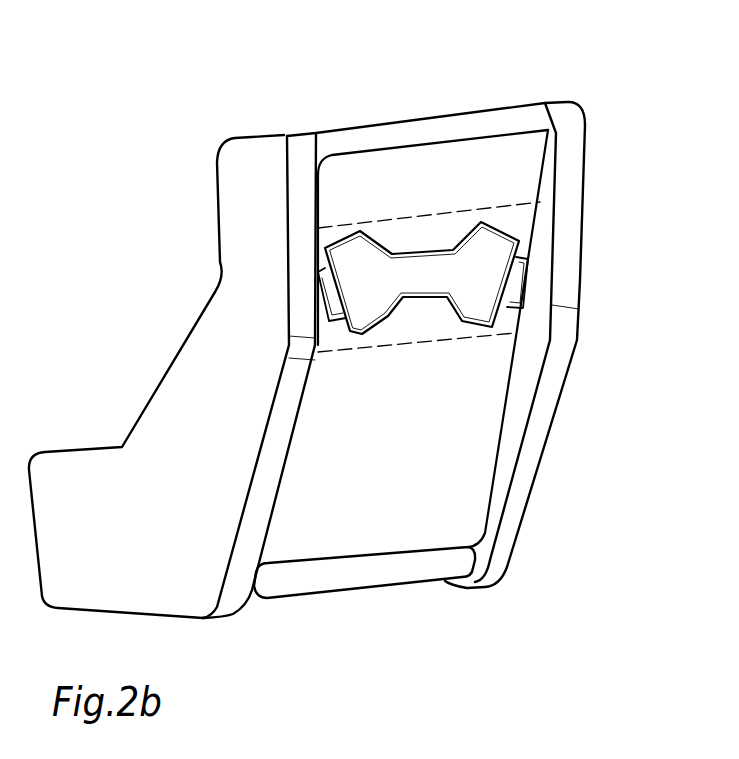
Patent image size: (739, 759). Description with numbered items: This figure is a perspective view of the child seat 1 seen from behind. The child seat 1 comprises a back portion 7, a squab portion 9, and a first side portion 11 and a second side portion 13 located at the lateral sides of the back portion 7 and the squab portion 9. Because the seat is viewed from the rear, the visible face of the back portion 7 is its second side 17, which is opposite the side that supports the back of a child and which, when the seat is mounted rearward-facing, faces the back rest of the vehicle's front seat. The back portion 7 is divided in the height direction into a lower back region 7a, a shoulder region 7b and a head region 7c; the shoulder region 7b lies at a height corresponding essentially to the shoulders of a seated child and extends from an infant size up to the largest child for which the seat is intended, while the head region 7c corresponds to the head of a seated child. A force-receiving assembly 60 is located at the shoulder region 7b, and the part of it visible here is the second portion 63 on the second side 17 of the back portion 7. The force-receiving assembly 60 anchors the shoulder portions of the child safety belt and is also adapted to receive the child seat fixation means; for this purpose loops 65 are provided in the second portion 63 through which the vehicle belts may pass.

The child seat 1 is at (120, 158).
The back portion 7 is at (406, 121).
The lower back region 7a is at (408, 519).
The shoulder region 7b is at (440, 329).
The head region 7c is at (471, 183).
The squab portion 9 is at (377, 568).
The first side portion 11 is at (540, 413).
The second side portion 13 is at (183, 417).
The second side 17 is at (418, 443).
The force-receiving assembly 60 is at (500, 196).
The second portion 63 is at (418, 273).
The loops 65 is at (528, 281).